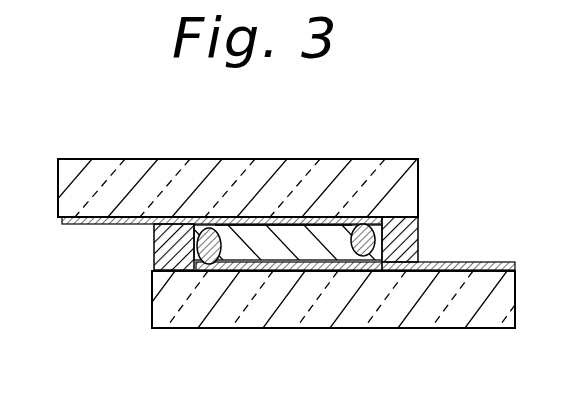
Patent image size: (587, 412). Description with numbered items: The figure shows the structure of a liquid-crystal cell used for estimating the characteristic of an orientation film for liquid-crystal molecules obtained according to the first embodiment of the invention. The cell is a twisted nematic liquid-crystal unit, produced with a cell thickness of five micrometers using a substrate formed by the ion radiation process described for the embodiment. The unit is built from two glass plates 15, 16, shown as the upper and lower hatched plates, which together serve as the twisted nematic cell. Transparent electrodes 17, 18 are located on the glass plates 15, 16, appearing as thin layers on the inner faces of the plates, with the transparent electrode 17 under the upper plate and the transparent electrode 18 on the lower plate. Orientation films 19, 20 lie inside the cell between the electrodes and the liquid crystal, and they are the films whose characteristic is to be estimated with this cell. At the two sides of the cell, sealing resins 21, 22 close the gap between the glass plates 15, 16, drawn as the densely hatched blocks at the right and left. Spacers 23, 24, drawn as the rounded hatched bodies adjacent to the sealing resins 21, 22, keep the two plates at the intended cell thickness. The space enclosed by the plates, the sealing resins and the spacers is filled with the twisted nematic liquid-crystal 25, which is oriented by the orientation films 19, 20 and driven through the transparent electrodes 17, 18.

The glass plate 15 is at (397, 173).
The glass plate 16 is at (200, 300).
The transparent electrode 17 is at (93, 225).
The transparent electrode 18 is at (462, 262).
The orientation film 19 is at (347, 216).
The orientation film 20 is at (313, 258).
The sealing resin 21 is at (420, 230).
The sealing resin 22 is at (155, 257).
The spacer 23 is at (214, 220).
The spacer 24 is at (365, 255).
The twisted nematic liquid-crystal 25 is at (272, 253).